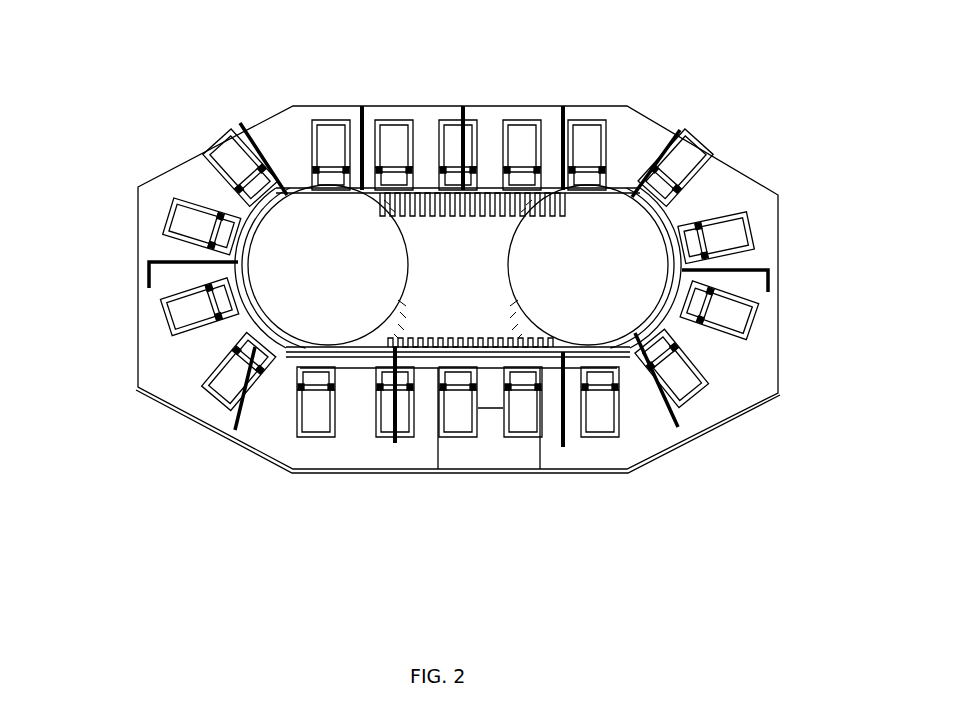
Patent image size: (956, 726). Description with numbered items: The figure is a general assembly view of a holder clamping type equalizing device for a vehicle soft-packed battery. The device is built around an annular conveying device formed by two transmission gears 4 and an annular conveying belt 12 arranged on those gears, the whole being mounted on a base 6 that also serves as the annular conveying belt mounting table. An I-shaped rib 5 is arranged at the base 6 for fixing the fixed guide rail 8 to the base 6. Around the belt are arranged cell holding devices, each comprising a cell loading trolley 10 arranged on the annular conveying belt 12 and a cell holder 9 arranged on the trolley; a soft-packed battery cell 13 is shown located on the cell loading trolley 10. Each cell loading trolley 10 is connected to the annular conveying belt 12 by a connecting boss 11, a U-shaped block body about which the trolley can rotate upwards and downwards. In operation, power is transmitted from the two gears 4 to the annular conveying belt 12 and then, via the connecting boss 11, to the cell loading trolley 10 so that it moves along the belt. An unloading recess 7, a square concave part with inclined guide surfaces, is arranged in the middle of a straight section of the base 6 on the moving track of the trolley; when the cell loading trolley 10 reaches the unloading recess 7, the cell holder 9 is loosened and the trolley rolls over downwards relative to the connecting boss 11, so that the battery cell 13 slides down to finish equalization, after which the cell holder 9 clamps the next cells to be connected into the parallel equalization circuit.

The transmission gear 4 is at (283, 230).
The I-shaped rib 5 is at (148, 280).
The base 6 is at (267, 432).
The unloading recess 7 is at (481, 460).
The guide rail 8 is at (616, 360).
The cell holder 9 is at (683, 373).
The cell loading trolley 10 is at (604, 140).
The connecting boss 11 is at (540, 173).
The annular conveying belt 12 is at (432, 185).
The soft-packed battery cell 13 is at (322, 150).